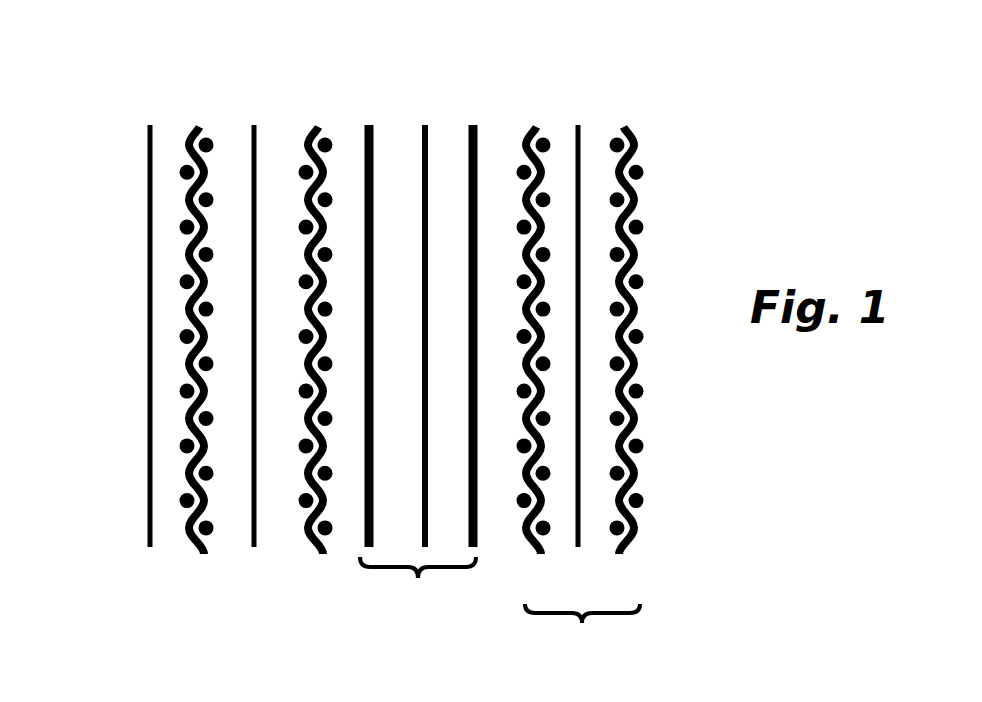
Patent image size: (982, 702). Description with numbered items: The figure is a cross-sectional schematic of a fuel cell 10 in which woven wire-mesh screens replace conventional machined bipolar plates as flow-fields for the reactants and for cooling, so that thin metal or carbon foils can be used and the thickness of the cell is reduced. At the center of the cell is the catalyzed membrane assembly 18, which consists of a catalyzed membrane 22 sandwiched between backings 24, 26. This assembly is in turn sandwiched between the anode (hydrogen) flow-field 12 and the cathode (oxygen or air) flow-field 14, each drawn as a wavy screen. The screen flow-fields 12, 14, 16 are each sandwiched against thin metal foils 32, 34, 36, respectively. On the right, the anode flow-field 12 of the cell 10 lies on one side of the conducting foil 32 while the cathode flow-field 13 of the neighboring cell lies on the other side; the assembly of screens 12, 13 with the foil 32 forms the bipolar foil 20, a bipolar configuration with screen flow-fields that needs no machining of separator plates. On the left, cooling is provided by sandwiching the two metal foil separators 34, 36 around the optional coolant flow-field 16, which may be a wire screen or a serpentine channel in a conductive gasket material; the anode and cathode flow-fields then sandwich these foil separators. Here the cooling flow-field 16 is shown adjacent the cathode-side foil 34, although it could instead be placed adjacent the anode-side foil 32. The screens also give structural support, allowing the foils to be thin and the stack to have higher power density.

The fuel cell 10 is at (638, 92).
The anode flow-field 12 is at (537, 558).
The cathode flow-field of adjacent fuel cell 13 is at (640, 418).
The cathode flow-field 14 is at (307, 548).
The coolant flow-field 16 is at (195, 557).
The catalyzed membrane assembly 18 is at (418, 584).
The bipolar foil 20 is at (582, 631).
The catalyzed membrane 22 is at (434, 128).
The backing 24 is at (483, 128).
The backing 26 is at (378, 126).
The conducting foil 32 is at (574, 532).
The metal foil separator 34 is at (248, 540).
The metal foil separator 36 is at (145, 500).